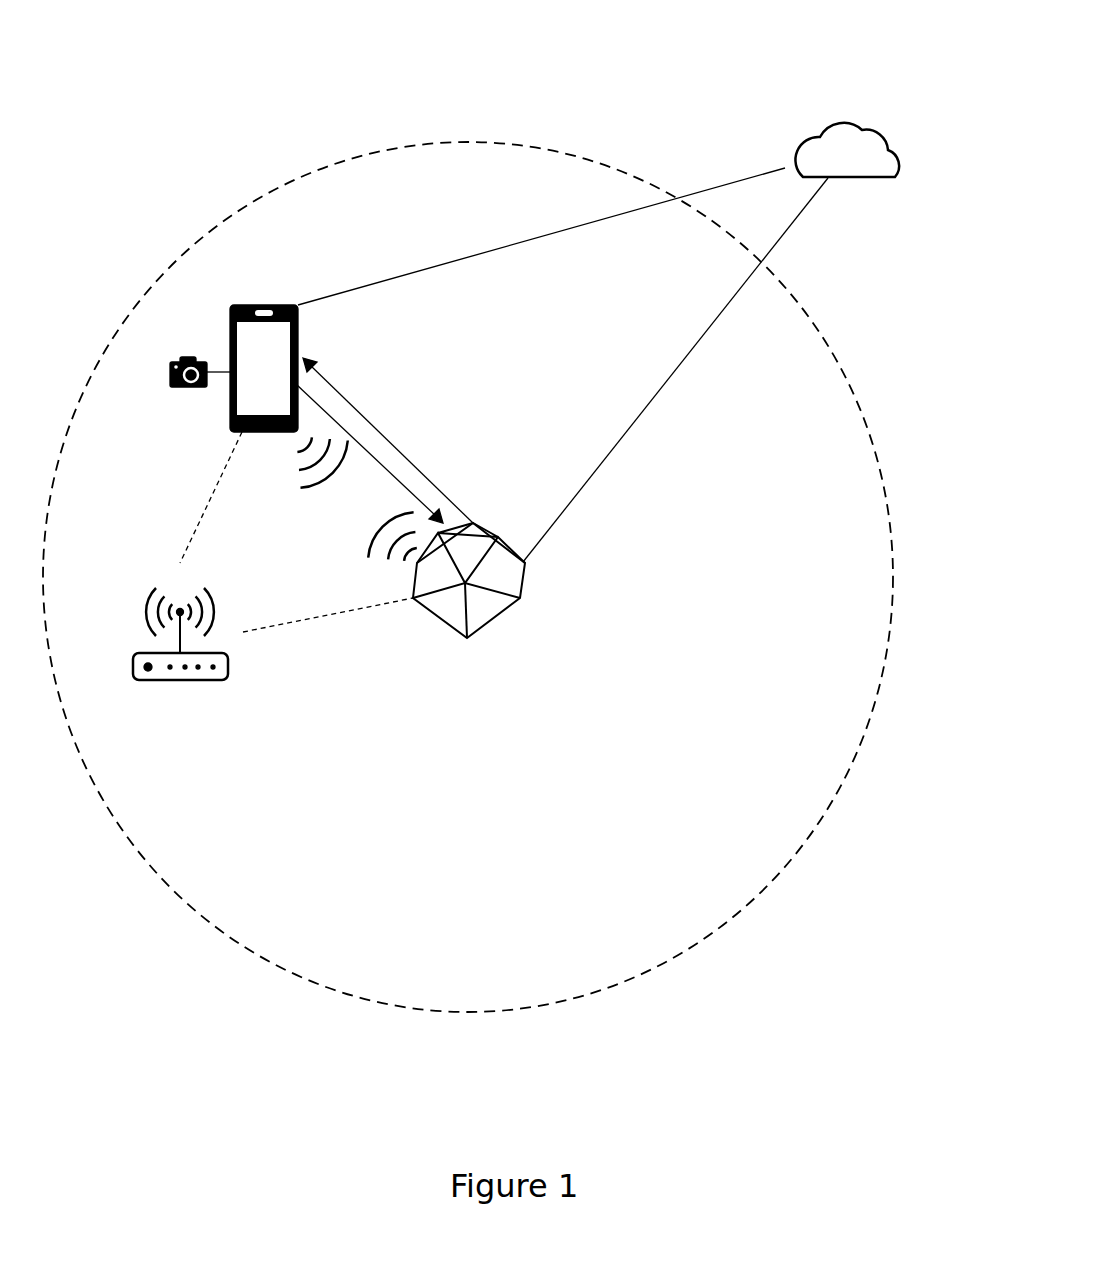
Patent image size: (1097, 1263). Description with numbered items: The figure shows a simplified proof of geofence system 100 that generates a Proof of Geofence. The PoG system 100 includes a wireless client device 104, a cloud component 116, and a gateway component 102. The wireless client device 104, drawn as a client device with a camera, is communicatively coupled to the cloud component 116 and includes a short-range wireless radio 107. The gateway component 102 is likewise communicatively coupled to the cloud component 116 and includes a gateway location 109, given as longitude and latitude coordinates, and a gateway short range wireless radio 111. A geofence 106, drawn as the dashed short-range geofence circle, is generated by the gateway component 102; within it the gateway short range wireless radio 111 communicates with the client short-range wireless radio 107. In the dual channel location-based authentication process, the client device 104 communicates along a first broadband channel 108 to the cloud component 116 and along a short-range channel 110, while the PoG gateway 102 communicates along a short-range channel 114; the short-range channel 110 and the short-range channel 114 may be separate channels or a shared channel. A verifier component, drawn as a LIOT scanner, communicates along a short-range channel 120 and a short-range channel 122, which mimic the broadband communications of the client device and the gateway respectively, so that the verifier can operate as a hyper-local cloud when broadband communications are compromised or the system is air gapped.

The PoG system 100 is at (474, 72).
The gateway component 102 is at (523, 587).
The wireless client device 104 is at (262, 245).
The geofence 106 is at (808, 317).
The short-range wireless radio 107 is at (303, 437).
The first broadband channel 108 is at (475, 252).
The gateway location 109 is at (528, 665).
The short-range channel 110 is at (388, 477).
The gateway short range wireless radio 111 is at (407, 540).
The short-range channel 114 is at (390, 442).
The cloud component 116 is at (838, 108).
The short-range channel 120 is at (210, 502).
The short-range channel 122 is at (352, 607).